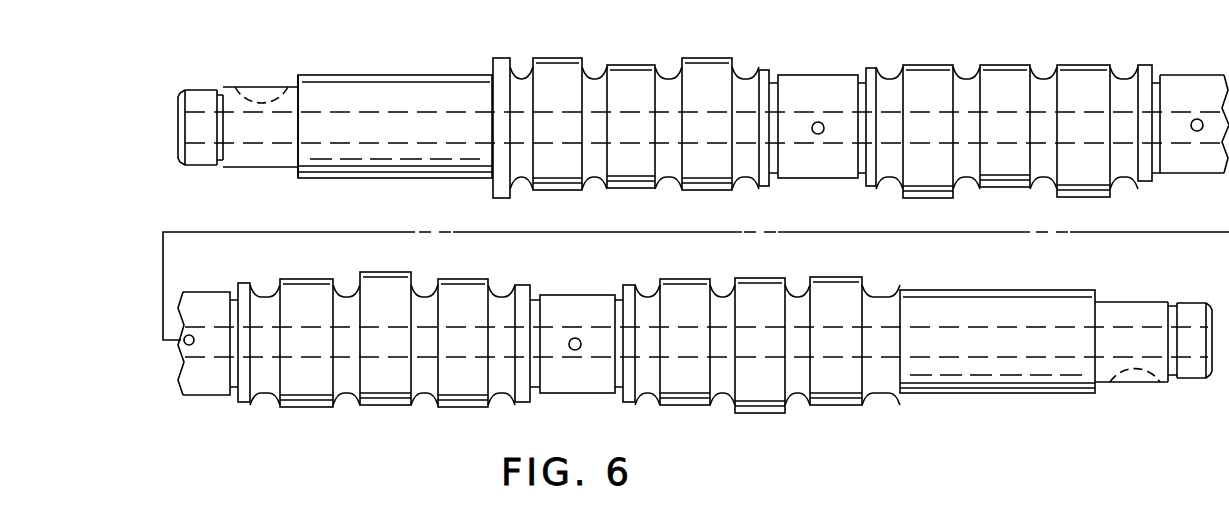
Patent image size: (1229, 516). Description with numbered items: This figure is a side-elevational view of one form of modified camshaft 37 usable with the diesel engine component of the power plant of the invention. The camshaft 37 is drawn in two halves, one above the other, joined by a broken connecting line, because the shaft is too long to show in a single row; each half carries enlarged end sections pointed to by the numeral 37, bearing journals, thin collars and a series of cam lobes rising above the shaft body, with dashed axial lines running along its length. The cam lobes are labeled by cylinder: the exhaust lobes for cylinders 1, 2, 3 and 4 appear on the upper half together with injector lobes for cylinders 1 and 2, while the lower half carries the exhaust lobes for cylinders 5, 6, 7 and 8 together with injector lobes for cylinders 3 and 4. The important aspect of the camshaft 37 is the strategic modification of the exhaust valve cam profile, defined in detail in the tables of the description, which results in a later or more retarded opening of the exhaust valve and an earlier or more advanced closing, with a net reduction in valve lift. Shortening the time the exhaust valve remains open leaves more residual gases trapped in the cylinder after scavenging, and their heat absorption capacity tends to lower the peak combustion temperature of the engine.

The camshaft 37 is at (400, 71).
The cylinder 1 exhaust and injector cam lobes 1 is at (596, 128).
The cylinder 2 exhaust and injector cam lobes 2 is at (853, 128).
The cylinder 3 exhaust and injector cam lobes 3 is at (660, 241).
The cylinder 4 exhaust and injector cam lobes 4 is at (926, 242).
The cylinder 5 exhaust cam lobe 5 is at (310, 327).
The cylinder 6 exhaust cam lobe 6 is at (473, 327).
The cylinder 7 exhaust cam lobe 7 is at (690, 326).
The cylinder 8 exhaust cam lobe 8 is at (838, 326).